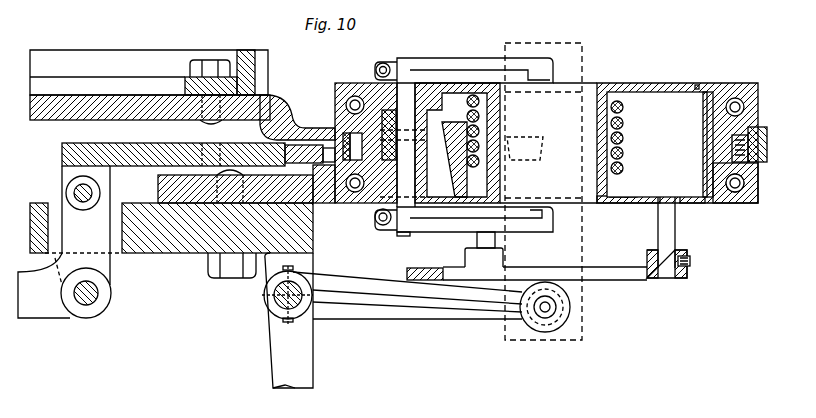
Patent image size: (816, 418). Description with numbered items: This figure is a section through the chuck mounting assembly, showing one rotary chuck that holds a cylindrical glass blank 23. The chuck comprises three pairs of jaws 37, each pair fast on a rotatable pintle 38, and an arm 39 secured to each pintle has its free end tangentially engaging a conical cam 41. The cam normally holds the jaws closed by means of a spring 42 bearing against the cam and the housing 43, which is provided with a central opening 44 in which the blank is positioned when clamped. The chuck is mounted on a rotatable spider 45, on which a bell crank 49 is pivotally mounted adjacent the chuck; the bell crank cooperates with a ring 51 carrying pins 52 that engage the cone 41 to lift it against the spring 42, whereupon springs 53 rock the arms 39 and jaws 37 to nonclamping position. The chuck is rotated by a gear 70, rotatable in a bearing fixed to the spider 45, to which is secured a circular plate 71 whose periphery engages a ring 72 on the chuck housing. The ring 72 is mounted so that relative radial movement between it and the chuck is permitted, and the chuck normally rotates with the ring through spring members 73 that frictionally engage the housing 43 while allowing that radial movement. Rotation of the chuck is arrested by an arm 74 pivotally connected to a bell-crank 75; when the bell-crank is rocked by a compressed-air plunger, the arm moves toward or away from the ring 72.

The gear 70 is at (268, 62).
The circular plate 71 is at (286, 118).
The arm 74 is at (62, 153).
The bell-crank 75 is at (36, 310).
The spider 45 is at (158, 253).
The bell crank 49 is at (337, 313).
The cylindrical blank 23 is at (585, 330).
The ring 51 is at (610, 275).
The pin 52 is at (675, 230).
The spring 53 is at (648, 198).
The conical cam 41 is at (610, 198).
The jaws 37 is at (445, 60).
The pintle 38 is at (418, 117).
The arm 39 is at (437, 160).
The central opening 44 is at (591, 93).
The spring 42 is at (620, 108).
The housing 43 is at (668, 85).
The ring 72 is at (760, 133).
The spring member 73 is at (760, 160).